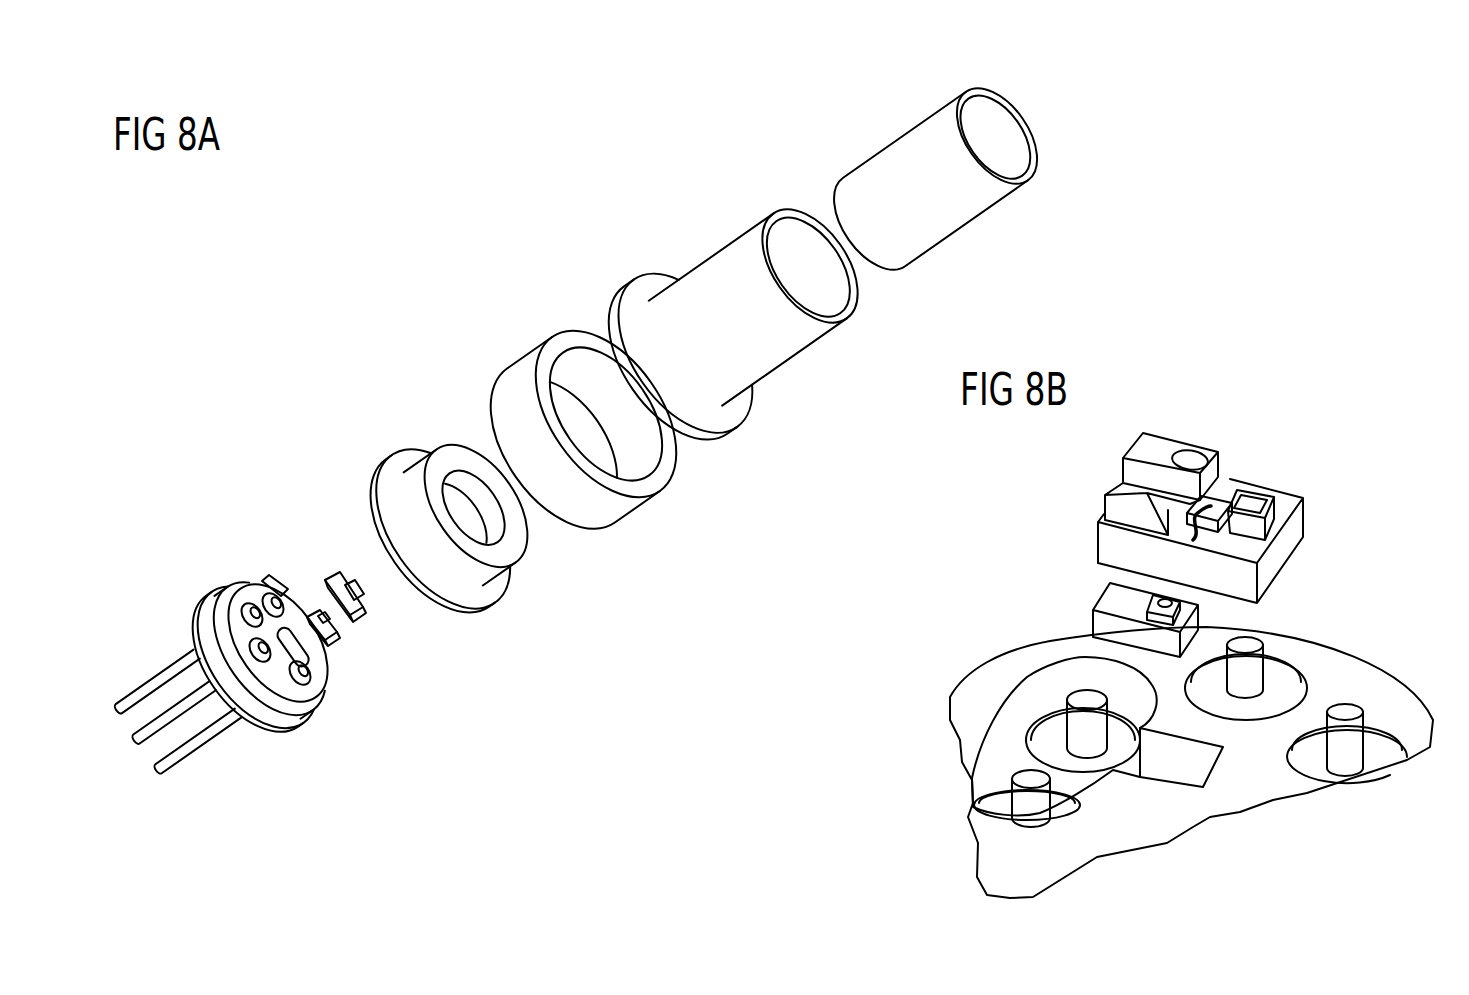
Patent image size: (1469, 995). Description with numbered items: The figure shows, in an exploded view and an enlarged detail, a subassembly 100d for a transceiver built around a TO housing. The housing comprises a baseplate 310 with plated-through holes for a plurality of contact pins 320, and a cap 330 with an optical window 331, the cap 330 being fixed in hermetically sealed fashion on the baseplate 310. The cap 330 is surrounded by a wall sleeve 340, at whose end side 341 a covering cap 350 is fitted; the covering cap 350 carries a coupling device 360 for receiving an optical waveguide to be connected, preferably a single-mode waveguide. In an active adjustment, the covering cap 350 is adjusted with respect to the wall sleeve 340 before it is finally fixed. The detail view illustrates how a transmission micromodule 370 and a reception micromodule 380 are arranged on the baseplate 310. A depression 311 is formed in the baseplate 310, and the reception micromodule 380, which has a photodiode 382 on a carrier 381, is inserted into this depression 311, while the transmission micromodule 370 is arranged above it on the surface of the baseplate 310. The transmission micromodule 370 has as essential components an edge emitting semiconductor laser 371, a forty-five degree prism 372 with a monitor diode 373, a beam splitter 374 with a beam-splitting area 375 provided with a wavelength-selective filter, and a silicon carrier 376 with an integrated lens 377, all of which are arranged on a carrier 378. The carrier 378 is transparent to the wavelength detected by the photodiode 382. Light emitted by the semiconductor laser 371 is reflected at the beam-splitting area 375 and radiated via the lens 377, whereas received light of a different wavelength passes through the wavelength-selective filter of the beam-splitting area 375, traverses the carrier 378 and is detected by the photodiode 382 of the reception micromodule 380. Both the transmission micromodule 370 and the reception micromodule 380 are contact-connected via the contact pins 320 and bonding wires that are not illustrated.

In FIG. 8A, the subassembly 100d is at (471, 284).
In FIG. 8A, the baseplate 310 is at (297, 713).
In FIG. 8B, the baseplate 310 is at (1355, 668).
In FIG. 8A, the depression 311 is at (292, 600).
In FIG. 8B, the depression 311 is at (1207, 757).
In FIG. 8A, the contact pins 320 is at (176, 764).
In FIG. 8B, the contact pins 320 is at (1341, 762).
In FIG. 8A, the cap 330 is at (484, 572).
In FIG. 8A, the optical window 331 is at (476, 522).
In FIG. 8A, the wall sleeve 340 is at (617, 512).
In FIG. 8A, the end side 341 is at (657, 478).
In FIG. 8A, the covering cap 350 is at (763, 377).
In FIG. 8A, the coupling device 360 is at (963, 220).
In FIG. 8A, the transmission micromodule 370 is at (343, 575).
In FIG. 8B, the transmission micromodule 370 is at (1199, 493).
In FIG. 8B, the edge emitting semiconductor laser 371 is at (1213, 508).
In FIG. 8B, the 45° prism 372 is at (1268, 518).
In FIG. 8B, the monitor diode 373 is at (1250, 502).
In FIG. 8B, the beam splitter 374 is at (1110, 506).
In FIG. 8B, the beam-splitting area 375 is at (1173, 515).
In FIG. 8B, the silicon carrier 376 is at (1152, 440).
In FIG. 8B, the integrated lens 377 is at (1191, 455).
In FIG. 8B, the carrier 378 is at (1103, 546).
In FIG. 8A, the reception micromodule 380 is at (330, 633).
In FIG. 8B, the reception micromodule 380 is at (1089, 605).
In FIG. 8B, the carrier 381 is at (1097, 624).
In FIG. 8B, the photodiode 382 is at (1116, 598).